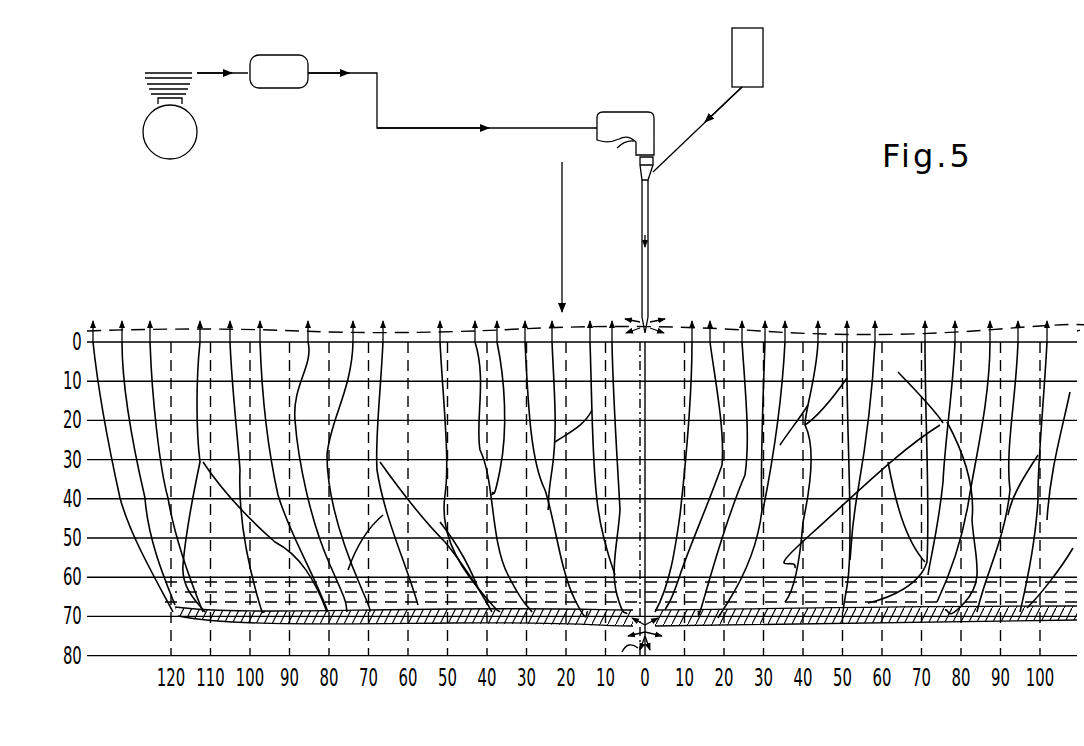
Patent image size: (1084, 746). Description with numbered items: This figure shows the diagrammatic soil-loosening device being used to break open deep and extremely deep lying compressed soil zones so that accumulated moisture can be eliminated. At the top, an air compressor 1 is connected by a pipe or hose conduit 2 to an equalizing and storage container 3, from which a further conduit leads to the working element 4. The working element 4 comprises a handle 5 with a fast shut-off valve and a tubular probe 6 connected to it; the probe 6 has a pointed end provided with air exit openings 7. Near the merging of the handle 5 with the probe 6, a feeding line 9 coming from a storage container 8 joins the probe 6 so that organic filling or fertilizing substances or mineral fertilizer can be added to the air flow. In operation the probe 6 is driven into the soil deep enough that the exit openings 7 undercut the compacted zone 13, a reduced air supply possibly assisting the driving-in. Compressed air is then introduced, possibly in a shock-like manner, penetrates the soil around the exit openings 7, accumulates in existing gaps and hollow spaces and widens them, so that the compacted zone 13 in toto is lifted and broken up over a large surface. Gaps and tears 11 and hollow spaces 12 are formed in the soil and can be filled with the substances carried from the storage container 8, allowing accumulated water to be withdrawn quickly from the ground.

The air compressor 1 is at (192, 122).
The pipe or hose conduit 2 is at (210, 73).
The equalizing and storage container 3 is at (288, 60).
The working element 4 is at (640, 260).
The handle 5 is at (650, 132).
The tubular probe 6 is at (648, 285).
The air exit openings 7 is at (652, 320).
The storage container 8 is at (758, 53).
The feeding line 9 is at (683, 138).
The gaps and tears 11 is at (460, 567).
The hollow spaces 12 is at (404, 551).
The compacted zone 13 is at (188, 592).